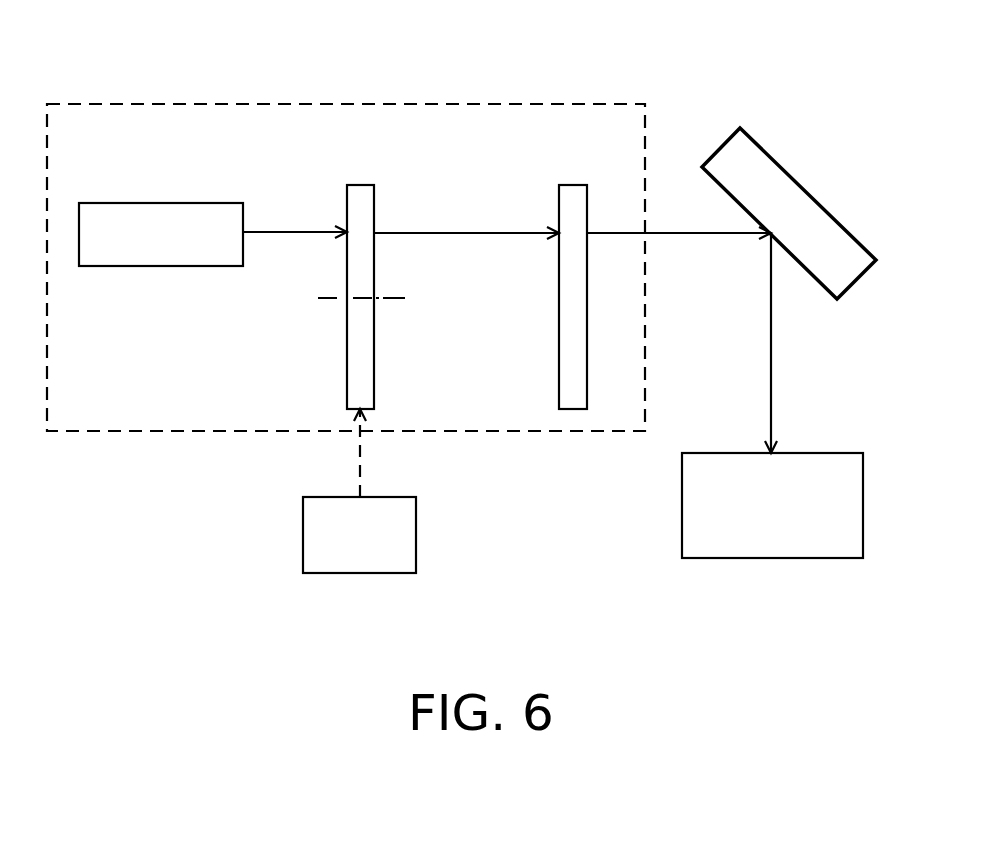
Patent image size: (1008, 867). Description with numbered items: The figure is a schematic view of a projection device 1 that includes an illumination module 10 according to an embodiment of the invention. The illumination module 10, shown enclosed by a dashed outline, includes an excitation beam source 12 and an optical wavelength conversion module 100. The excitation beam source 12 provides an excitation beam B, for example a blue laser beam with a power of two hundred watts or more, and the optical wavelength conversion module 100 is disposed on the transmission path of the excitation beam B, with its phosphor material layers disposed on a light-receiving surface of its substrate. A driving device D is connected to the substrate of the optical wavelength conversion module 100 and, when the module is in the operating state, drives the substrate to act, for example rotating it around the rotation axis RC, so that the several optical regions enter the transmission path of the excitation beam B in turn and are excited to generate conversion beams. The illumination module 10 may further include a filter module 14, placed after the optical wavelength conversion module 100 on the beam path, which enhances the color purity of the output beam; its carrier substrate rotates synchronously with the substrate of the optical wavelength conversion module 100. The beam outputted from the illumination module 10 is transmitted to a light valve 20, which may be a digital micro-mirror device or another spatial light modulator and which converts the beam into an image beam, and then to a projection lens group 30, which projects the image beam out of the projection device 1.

The projection device 1 is at (875, 617).
The illumination module 10 is at (346, 229).
The excitation beam source 12 is at (161, 203).
The filter module 14 is at (572, 185).
The light valve 20 is at (780, 162).
The projection lens group 30 is at (823, 453).
The optical wavelength conversion module 100 is at (364, 176).
The excitation beam B is at (270, 232).
The driving device D is at (416, 535).
The rotation axis RC is at (381, 299).